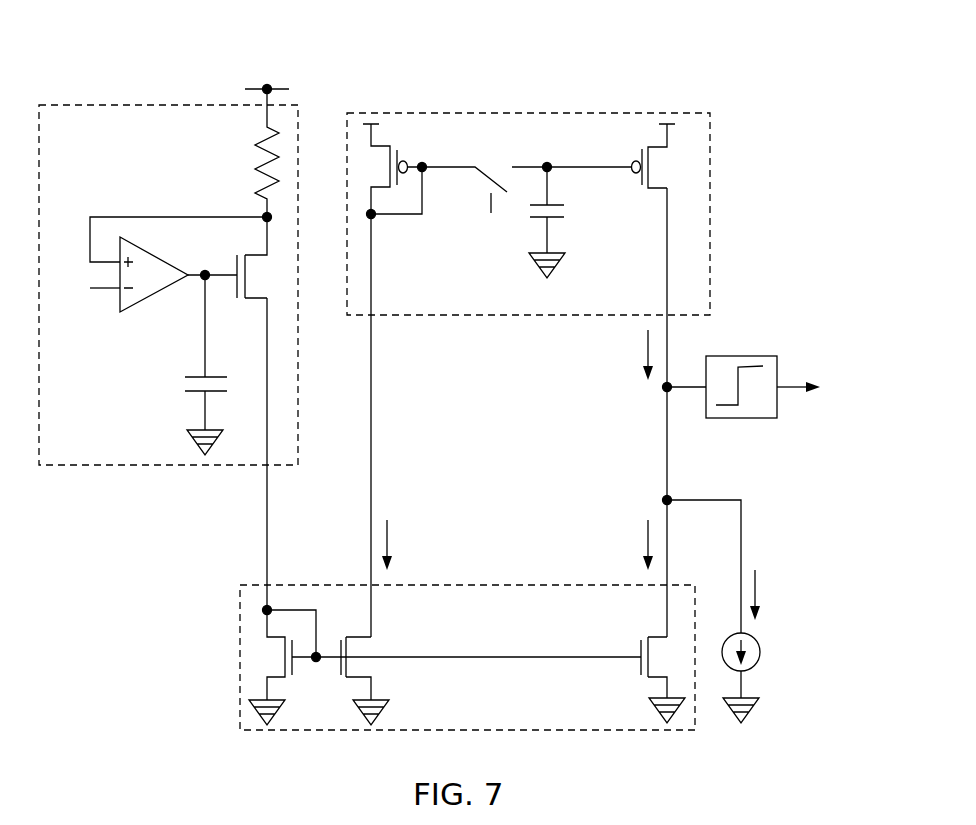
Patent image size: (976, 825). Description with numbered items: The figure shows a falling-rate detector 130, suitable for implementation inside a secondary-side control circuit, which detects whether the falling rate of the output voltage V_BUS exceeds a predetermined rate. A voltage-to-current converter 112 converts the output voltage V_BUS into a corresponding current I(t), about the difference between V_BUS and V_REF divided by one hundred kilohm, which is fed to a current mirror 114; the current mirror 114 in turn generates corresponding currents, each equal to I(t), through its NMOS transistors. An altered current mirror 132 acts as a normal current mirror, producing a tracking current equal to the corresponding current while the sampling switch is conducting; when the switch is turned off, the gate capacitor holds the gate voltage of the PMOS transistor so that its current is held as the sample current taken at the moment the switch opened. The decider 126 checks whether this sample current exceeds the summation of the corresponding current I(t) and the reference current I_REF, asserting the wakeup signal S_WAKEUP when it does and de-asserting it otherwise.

The falling-rate detector 130 is at (366, 76).
The voltage-to-current converter 112 is at (80, 133).
The altered current mirror 132 is at (538, 113).
The decider 126 is at (723, 356).
The current mirror 114 is at (501, 615).